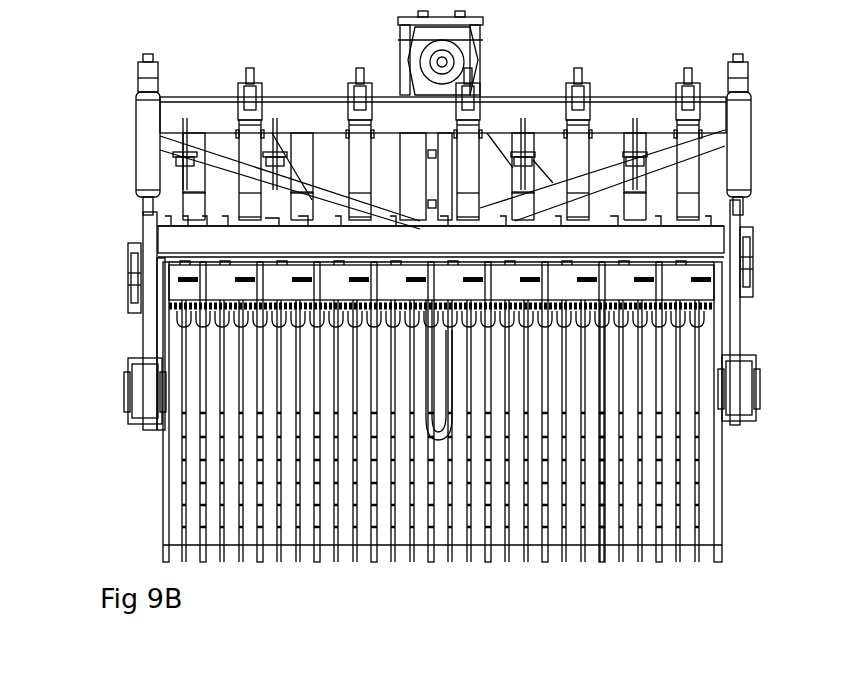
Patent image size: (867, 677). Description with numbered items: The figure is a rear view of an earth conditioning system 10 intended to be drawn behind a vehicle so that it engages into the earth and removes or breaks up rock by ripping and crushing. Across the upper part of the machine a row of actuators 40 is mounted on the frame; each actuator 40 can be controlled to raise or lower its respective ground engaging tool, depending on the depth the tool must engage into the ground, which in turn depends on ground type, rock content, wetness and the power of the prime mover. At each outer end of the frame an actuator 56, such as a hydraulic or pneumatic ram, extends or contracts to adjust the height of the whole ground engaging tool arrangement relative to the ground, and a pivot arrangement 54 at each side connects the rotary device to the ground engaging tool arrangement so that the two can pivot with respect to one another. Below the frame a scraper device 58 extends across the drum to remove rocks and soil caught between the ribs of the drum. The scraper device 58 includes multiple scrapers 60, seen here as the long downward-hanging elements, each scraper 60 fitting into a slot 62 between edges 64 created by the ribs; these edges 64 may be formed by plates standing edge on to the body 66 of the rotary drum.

The earth conditioning system 10 is at (375, 573).
The actuator 40 is at (410, 167).
The pivot arrangement 54 is at (126, 265).
The actuator 56 is at (150, 128).
The scraper device 58 is at (537, 240).
The scraper 60 is at (460, 318).
The slot 62 is at (498, 530).
The edge 64 is at (580, 553).
The body 66 is at (608, 507).